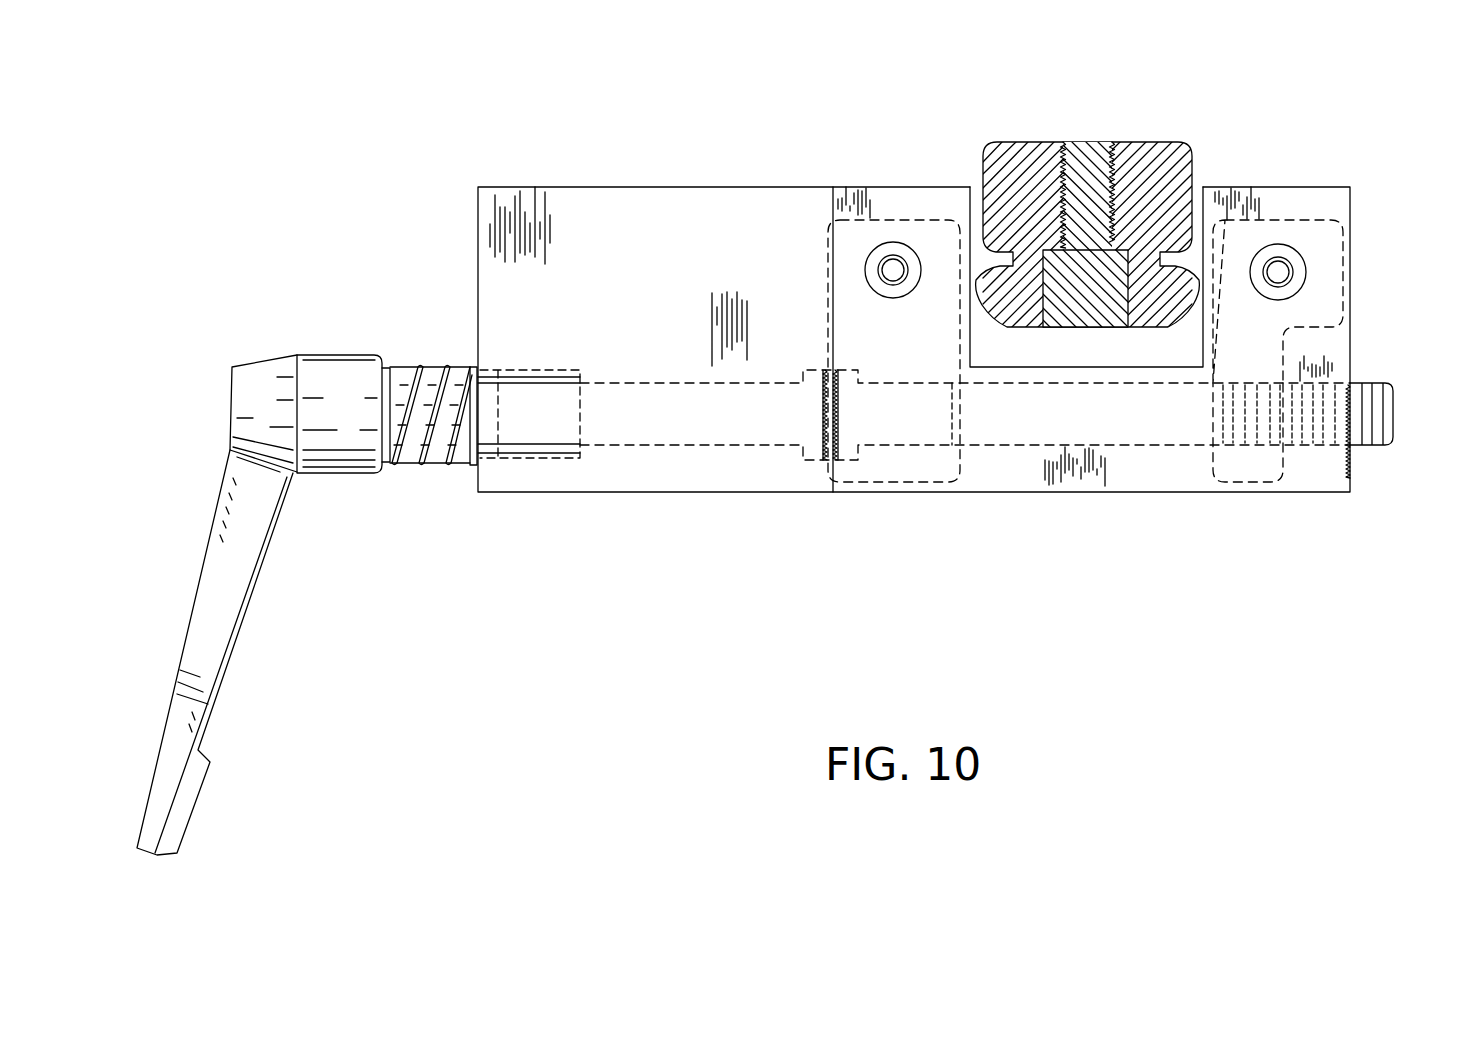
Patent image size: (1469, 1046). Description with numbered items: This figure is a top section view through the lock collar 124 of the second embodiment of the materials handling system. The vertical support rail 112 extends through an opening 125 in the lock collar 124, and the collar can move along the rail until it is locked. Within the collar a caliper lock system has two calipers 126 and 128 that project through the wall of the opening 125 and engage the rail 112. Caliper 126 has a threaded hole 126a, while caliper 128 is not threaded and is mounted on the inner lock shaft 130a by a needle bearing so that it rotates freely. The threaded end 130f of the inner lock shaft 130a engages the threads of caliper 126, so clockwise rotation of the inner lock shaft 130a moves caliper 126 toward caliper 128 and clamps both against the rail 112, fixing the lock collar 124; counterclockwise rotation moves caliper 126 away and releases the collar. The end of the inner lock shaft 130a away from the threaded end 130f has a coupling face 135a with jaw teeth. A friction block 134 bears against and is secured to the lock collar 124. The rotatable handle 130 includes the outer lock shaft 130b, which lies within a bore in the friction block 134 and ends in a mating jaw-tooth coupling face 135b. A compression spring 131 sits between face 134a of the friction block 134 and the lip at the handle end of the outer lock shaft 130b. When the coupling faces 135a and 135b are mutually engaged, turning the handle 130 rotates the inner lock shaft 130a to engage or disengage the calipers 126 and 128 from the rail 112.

The vertical support rail 112 is at (1147, 205).
The lock collar 124 is at (887, 210).
The opening 125 is at (972, 187).
The caliper 126 is at (1193, 300).
The threaded hole 126a is at (1248, 458).
The caliper 128 is at (965, 318).
The rotatable handle 130 is at (347, 497).
The inner lock shaft 130a is at (1138, 445).
The outer lock shaft 130b is at (628, 400).
The threaded end 130f is at (1395, 400).
The compression spring 131 is at (415, 473).
The friction block 134 is at (583, 220).
The face 134a is at (478, 225).
The coupling face 135a is at (837, 403).
The coupling face 135b is at (823, 410).